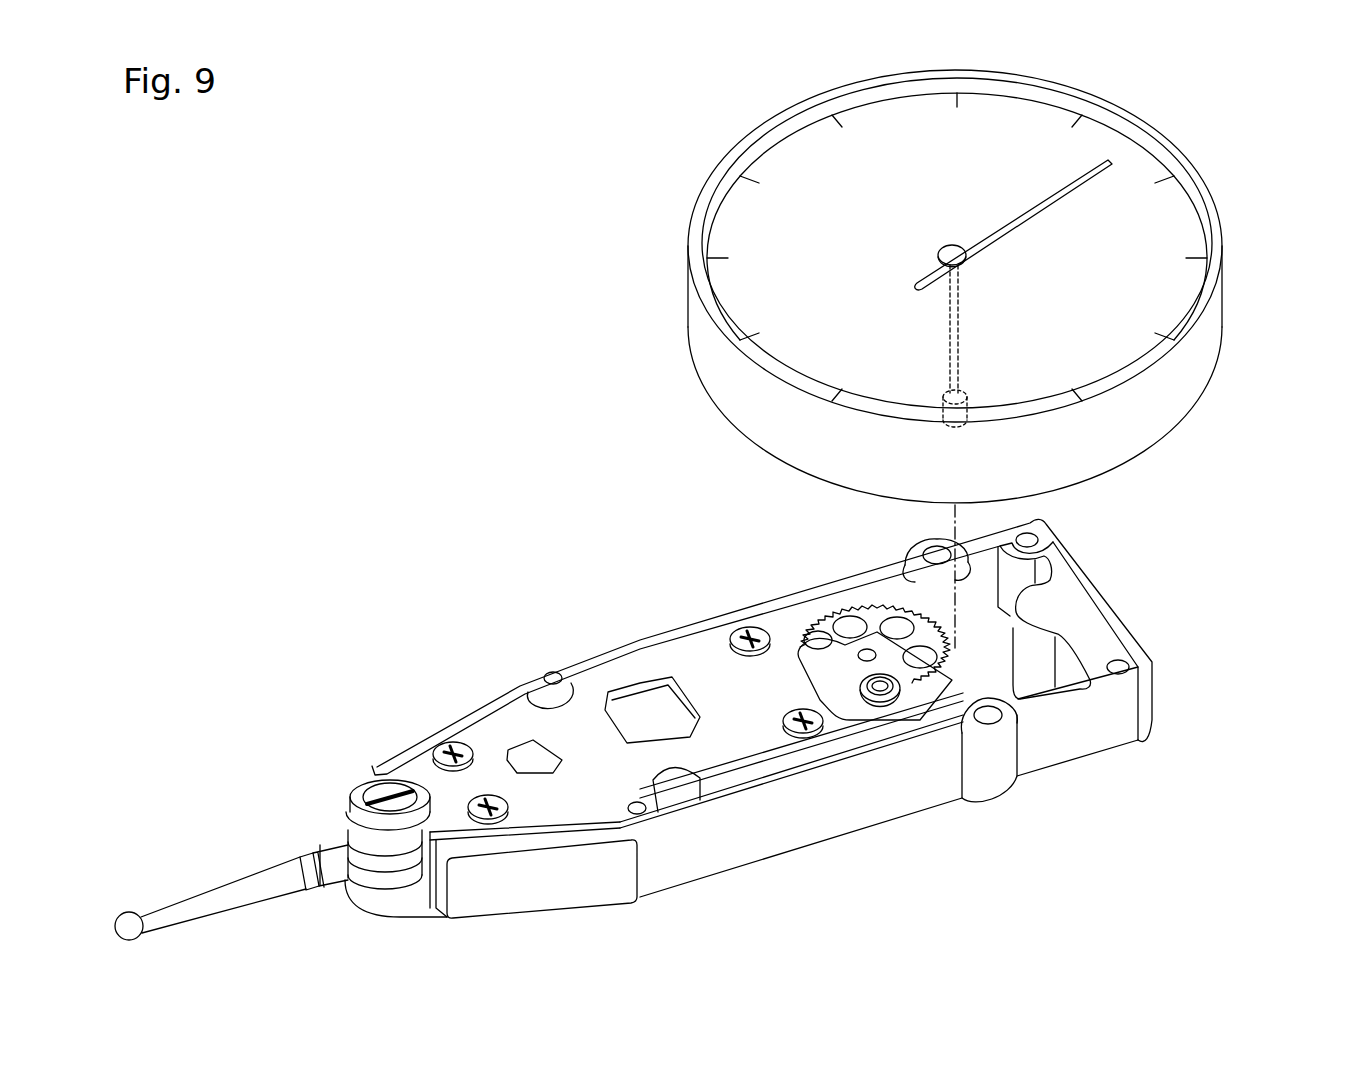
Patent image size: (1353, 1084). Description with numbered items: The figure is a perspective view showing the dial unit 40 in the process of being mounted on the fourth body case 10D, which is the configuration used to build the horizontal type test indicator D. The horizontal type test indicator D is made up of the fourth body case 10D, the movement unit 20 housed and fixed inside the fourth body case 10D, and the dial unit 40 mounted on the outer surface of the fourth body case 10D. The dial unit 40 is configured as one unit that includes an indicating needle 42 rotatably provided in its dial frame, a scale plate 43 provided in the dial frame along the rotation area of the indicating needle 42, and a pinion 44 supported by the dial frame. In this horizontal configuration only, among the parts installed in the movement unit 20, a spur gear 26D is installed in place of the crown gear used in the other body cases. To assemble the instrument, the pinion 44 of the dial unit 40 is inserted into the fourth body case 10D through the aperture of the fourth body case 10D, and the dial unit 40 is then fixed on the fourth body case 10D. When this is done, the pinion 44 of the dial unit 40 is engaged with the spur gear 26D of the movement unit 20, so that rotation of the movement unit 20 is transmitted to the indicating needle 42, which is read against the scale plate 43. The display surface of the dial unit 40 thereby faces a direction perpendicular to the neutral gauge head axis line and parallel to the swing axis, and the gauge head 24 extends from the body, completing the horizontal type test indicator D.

The horizontal type test indicator D is at (630, 447).
The fourth body case 10D is at (822, 830).
The movement unit 20 is at (661, 655).
The contact point (stylus) 24 is at (217, 888).
The spur gear 26D is at (873, 612).
The dial unit 40 is at (1182, 409).
The indicating needle 42 is at (1081, 186).
The scale plate 43 is at (1156, 224).
The pinion 44 is at (976, 404).